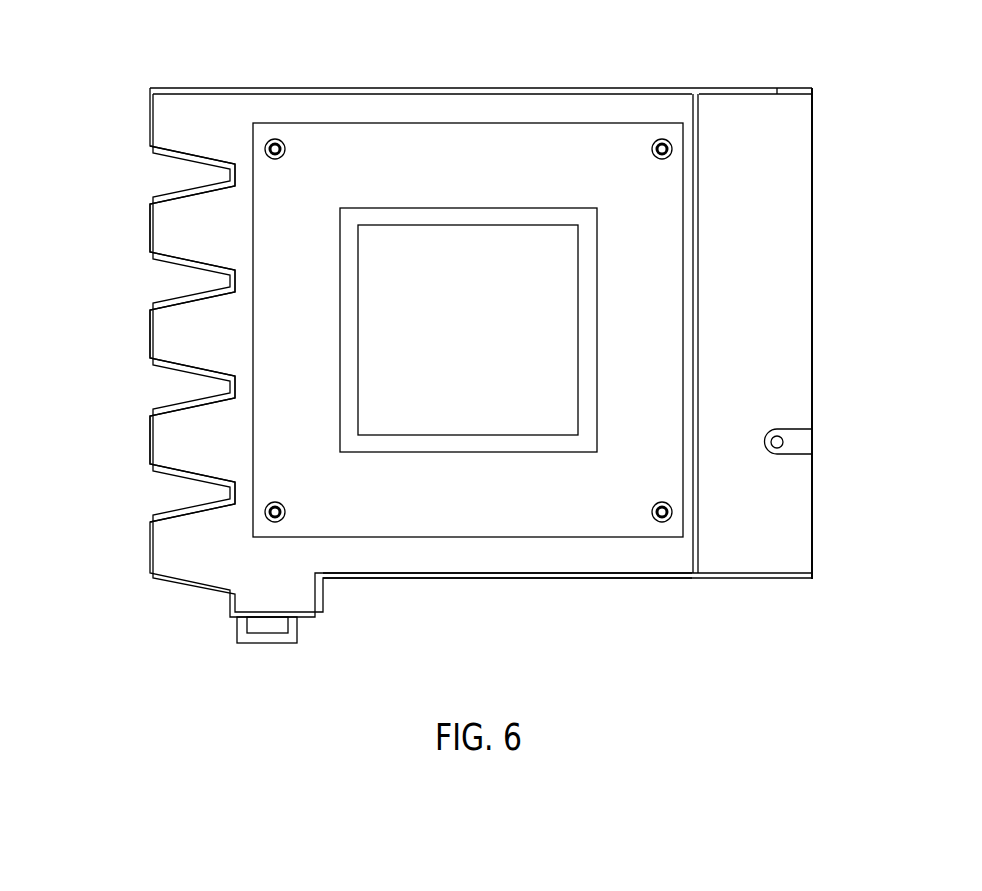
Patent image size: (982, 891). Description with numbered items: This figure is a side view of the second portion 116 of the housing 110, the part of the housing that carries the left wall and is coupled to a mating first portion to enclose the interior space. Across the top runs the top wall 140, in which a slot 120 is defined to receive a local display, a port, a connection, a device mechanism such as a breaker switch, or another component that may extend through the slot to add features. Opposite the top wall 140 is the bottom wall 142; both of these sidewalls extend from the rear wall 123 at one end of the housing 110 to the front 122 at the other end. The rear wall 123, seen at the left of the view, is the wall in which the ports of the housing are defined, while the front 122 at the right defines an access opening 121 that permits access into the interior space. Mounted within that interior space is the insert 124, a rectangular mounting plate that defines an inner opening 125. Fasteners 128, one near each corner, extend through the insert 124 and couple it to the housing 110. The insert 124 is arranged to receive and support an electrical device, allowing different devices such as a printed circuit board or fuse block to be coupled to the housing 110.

The housing 110 is at (471, 330).
The second portion 116 is at (562, 88).
The slot 120 is at (355, 88).
The access opening 121 is at (780, 330).
The front 122 is at (813, 223).
The rear wall 123 is at (150, 442).
The insert 124 is at (595, 497).
The inner opening 125 is at (488, 434).
The fasteners 128 is at (672, 149).
The top wall 140 is at (462, 88).
The bottom wall 142 is at (393, 583).